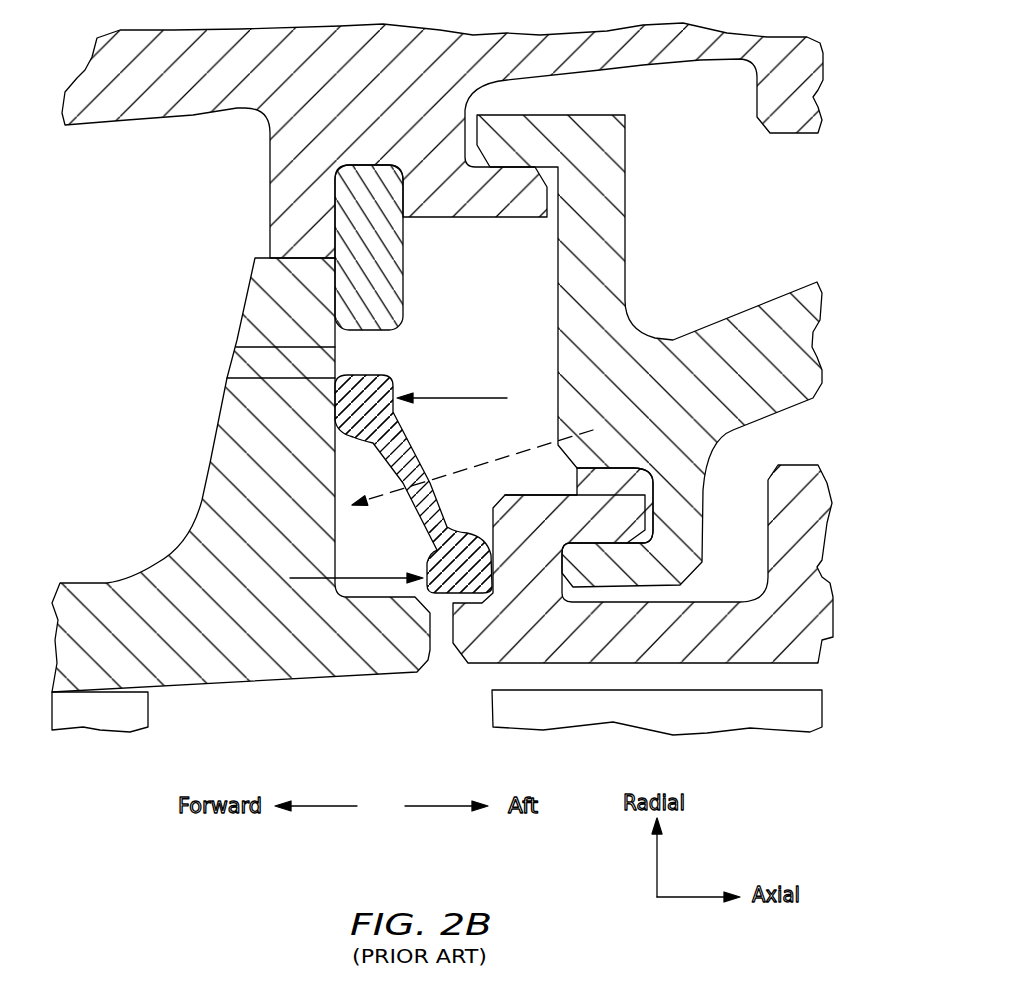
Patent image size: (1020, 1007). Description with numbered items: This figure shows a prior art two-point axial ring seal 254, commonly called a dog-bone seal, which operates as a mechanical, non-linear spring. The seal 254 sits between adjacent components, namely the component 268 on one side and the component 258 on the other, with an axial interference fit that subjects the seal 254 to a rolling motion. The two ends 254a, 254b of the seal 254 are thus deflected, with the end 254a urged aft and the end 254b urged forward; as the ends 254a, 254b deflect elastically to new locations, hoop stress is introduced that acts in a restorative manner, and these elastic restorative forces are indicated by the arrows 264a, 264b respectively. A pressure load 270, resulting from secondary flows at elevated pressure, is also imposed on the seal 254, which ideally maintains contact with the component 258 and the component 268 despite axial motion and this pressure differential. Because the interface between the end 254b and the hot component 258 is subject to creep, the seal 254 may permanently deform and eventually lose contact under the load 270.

The component 268 is at (293, 313).
The two-point axial ring seal 254 is at (400, 477).
The end of the seal 254a is at (357, 395).
The end of the seal 254b is at (458, 565).
The arrow 264a is at (437, 398).
The arrow 264b is at (313, 578).
The pressure load 270 is at (593, 430).
The component 258 is at (535, 570).